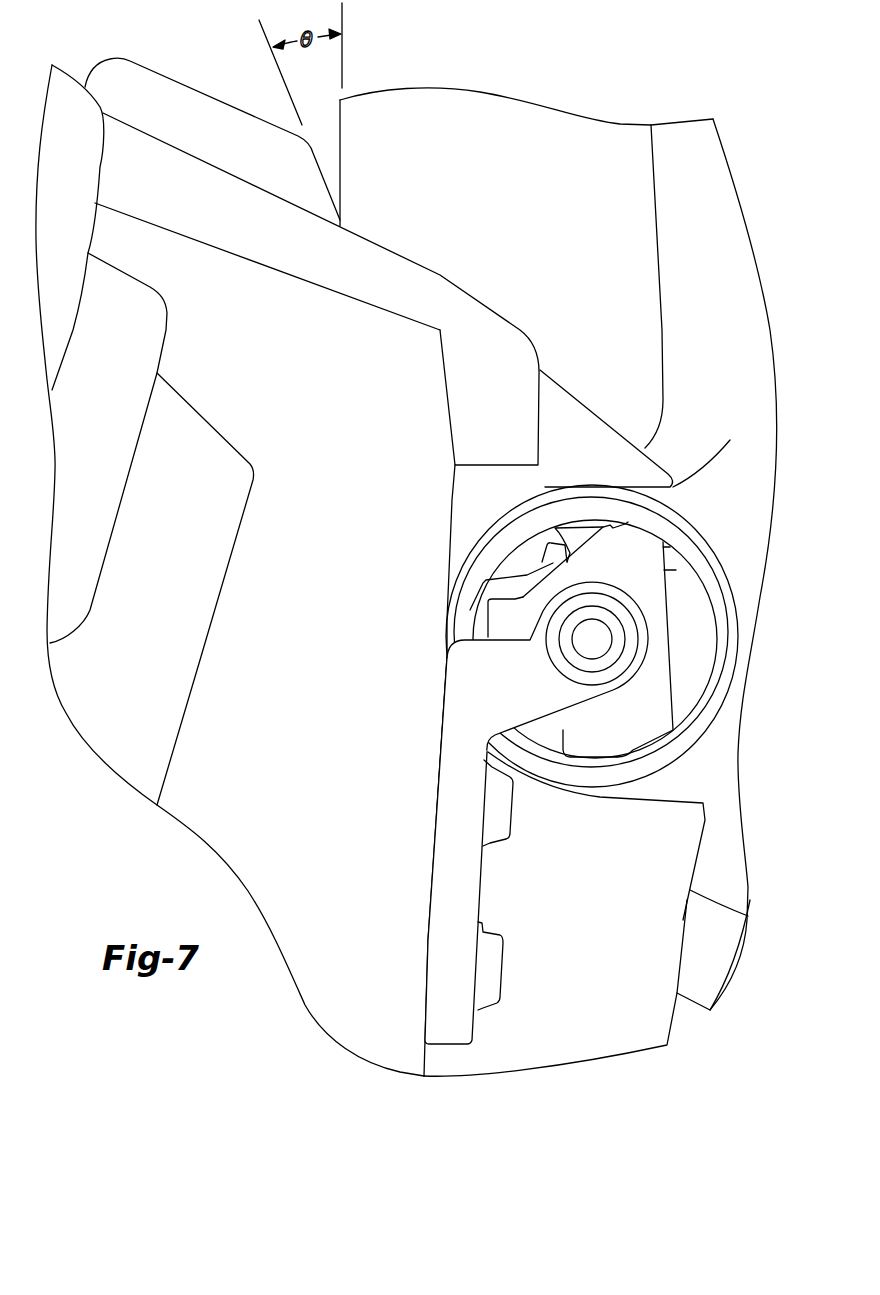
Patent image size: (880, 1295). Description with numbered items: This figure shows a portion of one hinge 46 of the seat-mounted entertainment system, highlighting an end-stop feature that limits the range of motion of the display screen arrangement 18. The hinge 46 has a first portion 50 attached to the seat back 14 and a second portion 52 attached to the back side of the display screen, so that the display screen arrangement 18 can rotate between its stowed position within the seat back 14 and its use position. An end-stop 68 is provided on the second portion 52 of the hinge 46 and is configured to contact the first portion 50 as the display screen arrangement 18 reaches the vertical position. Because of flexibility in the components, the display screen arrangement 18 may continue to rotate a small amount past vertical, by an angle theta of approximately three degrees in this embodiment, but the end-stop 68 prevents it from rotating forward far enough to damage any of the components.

The seat back 14 is at (332, 1040).
The display screen arrangement 18 is at (710, 187).
The hinge 46 is at (664, 582).
The first portion 50 is at (448, 1035).
The second portion 52 is at (673, 700).
The end-stop 68 is at (508, 600).